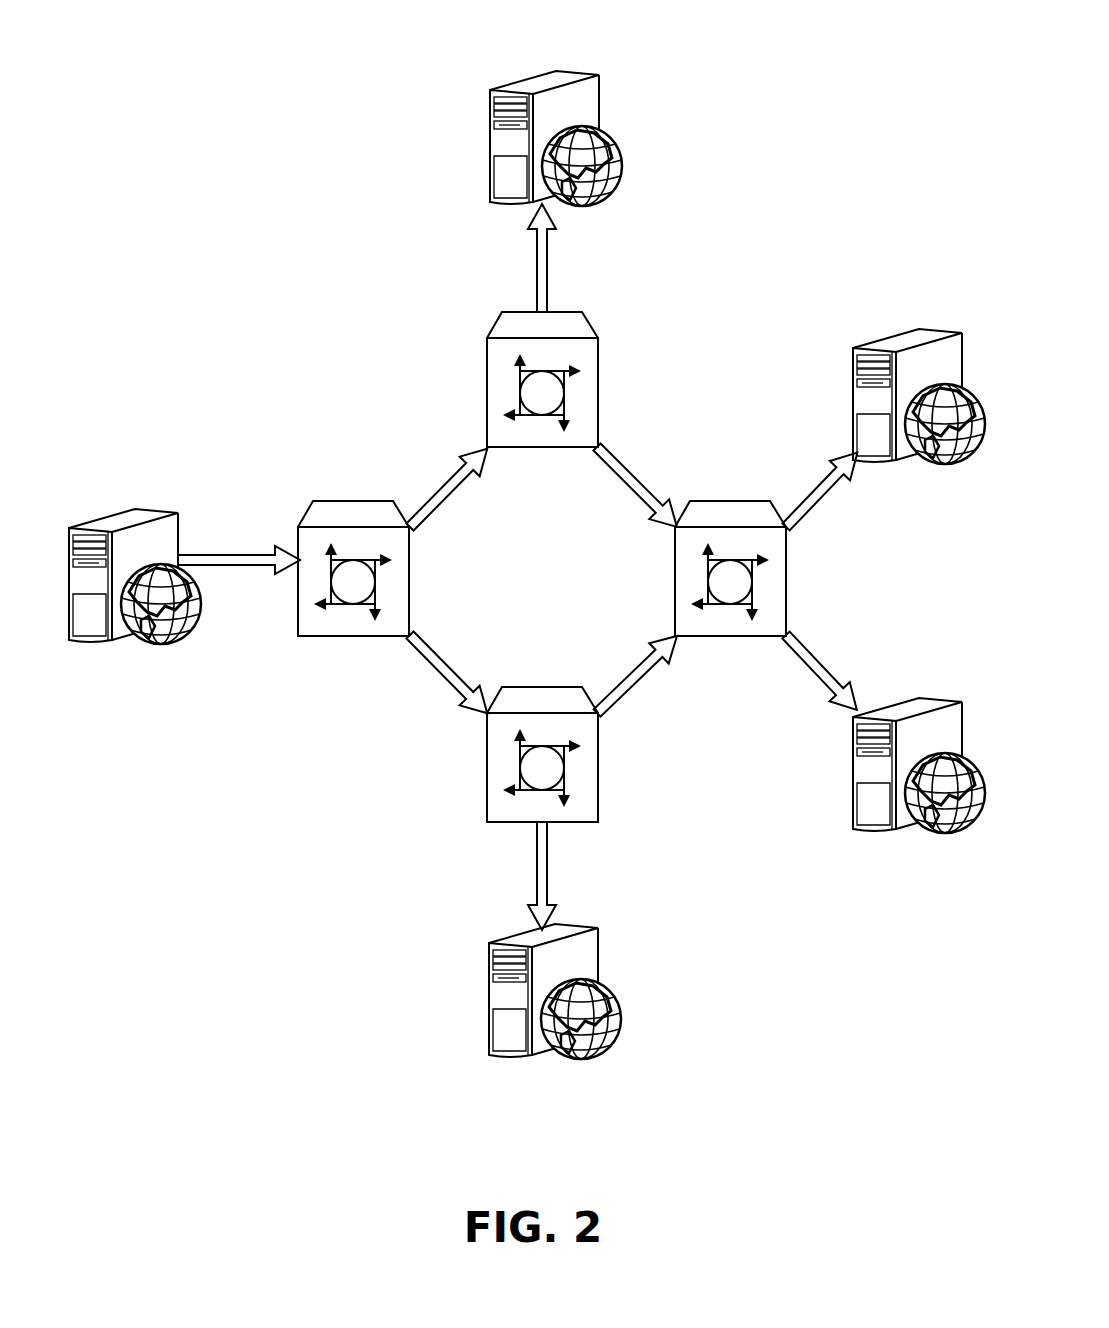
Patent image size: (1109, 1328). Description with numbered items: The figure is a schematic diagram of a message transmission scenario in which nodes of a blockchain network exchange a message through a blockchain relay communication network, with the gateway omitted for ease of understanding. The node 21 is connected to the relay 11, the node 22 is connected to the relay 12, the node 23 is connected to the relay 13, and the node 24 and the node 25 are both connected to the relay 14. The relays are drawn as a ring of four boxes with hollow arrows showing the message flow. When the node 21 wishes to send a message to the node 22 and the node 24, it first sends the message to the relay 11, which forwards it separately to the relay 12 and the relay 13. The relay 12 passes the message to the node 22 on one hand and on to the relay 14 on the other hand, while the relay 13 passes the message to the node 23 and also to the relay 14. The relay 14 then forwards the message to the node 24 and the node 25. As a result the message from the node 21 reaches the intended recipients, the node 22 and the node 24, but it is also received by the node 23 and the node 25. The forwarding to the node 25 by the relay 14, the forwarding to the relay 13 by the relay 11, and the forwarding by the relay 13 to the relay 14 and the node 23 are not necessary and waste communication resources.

The relay 11 is at (355, 505).
The relay 12 is at (573, 320).
The relay 13 is at (542, 695).
The relay 14 is at (730, 507).
The node 21 is at (155, 515).
The node 22 is at (572, 82).
The node 23 is at (593, 957).
The node 24 is at (932, 334).
The node 25 is at (932, 700).